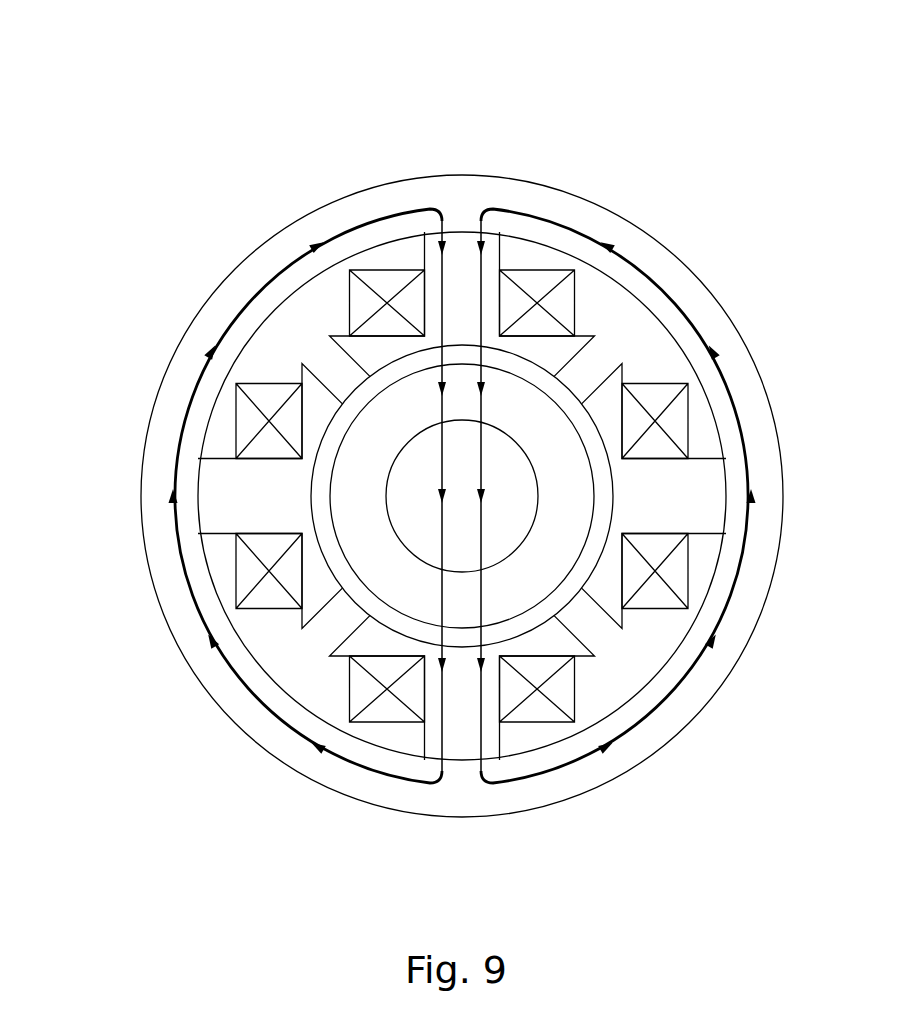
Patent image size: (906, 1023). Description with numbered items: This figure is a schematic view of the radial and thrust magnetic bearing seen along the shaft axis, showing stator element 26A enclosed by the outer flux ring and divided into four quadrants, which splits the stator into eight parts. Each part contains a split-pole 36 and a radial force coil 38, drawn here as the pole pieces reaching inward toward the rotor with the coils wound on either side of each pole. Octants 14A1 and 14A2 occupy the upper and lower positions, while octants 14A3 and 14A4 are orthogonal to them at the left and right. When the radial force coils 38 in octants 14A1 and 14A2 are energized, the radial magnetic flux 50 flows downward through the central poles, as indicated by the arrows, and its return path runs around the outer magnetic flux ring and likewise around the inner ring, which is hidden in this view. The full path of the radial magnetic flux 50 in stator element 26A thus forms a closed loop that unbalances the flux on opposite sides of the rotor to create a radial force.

The stator element 26A is at (483, 42).
The octant 14A1 is at (490, 155).
The octant 14A2 is at (487, 872).
The octant 14A3 is at (118, 499).
The octant 14A4 is at (862, 524).
The split-pole 36 is at (710, 480).
The radial force coil 38 is at (680, 416).
The radial magnetic flux 50 is at (690, 308).